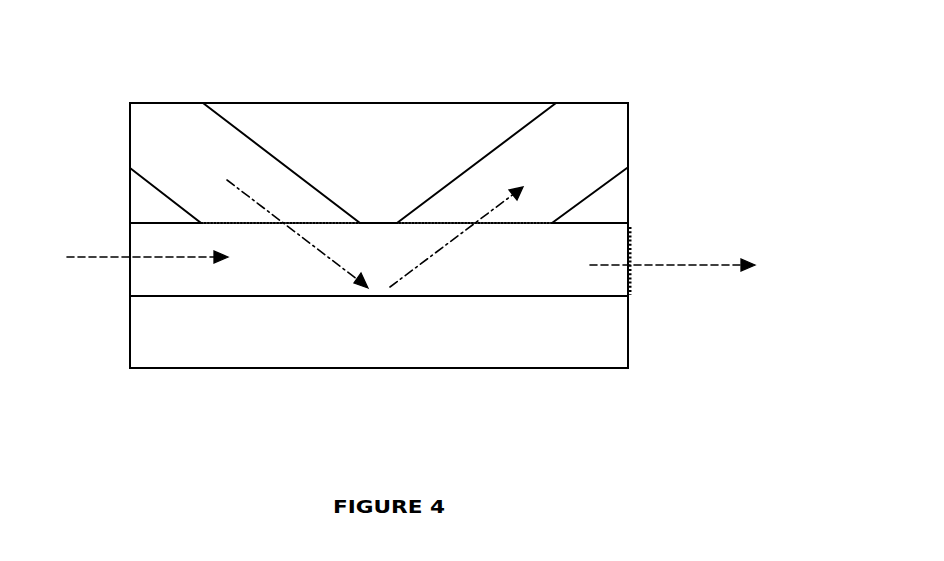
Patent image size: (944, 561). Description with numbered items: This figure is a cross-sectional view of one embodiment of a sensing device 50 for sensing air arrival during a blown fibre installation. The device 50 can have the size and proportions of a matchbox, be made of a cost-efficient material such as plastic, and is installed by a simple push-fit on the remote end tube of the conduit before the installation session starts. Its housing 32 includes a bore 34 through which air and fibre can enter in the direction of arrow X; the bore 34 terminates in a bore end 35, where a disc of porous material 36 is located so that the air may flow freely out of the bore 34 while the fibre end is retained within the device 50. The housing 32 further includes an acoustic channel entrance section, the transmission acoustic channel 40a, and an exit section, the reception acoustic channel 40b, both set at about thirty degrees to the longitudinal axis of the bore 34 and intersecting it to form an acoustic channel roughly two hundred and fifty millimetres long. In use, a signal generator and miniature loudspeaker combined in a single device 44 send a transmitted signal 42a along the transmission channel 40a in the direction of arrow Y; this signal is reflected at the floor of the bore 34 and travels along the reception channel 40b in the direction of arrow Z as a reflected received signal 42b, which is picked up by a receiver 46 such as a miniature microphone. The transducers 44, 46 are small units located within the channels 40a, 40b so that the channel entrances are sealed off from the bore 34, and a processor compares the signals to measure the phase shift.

The housing 32 is at (380, 102).
The bore 34 is at (180, 283).
The bore end 35 is at (658, 290).
The disc of porous material 36 is at (632, 243).
The transmission acoustic channel 40a is at (247, 153).
The reception acoustic channel 40b is at (505, 158).
The transmitted signal 42a is at (297, 234).
The reflected received signal 42b is at (456, 237).
The signal generator and transmitter device 44 is at (341, 192).
The receiver 46 is at (581, 193).
The sensing device 50 is at (405, 377).